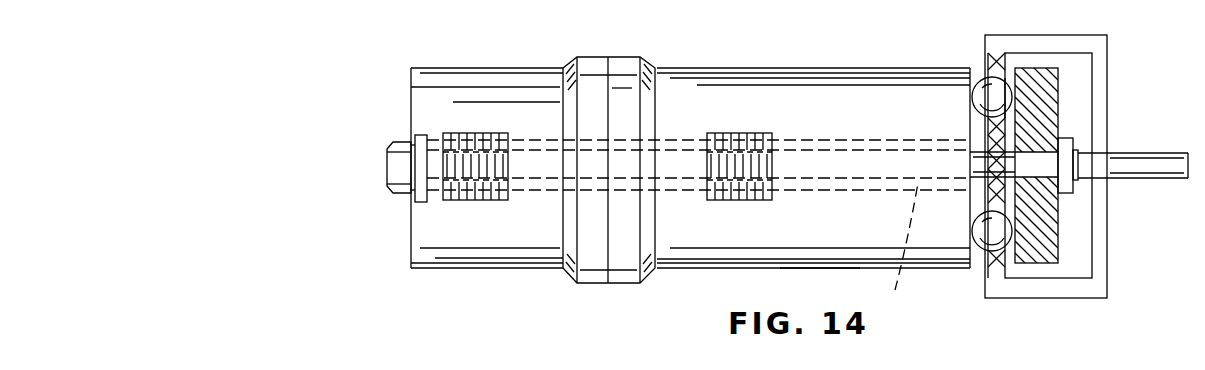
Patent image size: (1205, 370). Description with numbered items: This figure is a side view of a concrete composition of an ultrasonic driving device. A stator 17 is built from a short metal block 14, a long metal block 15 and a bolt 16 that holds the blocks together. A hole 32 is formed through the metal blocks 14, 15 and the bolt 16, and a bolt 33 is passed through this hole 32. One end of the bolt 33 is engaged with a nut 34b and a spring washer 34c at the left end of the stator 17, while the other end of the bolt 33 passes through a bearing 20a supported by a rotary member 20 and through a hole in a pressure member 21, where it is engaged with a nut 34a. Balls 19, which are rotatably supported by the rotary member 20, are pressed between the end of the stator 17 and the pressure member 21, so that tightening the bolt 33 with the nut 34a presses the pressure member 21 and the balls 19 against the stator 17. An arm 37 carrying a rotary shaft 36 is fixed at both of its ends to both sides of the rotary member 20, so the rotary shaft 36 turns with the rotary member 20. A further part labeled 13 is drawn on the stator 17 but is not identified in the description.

The coupling nut 13 is at (608, 284).
The short metal block 14 is at (490, 93).
The long metal block 15 is at (876, 100).
The bolt 16 is at (728, 201).
The stator 17 is at (832, 269).
The balls 19 is at (985, 92).
The rotary member 20 is at (991, 268).
The bearing 20a is at (988, 143).
The pressure member 21 is at (1033, 68).
The hole 32 is at (896, 245).
The bolt 33 is at (1078, 152).
The nut 34a is at (1072, 190).
The nut 34b is at (395, 188).
The spring washer 34c is at (412, 138).
The rotary shaft 36 is at (1153, 165).
The arm 37 is at (1031, 290).